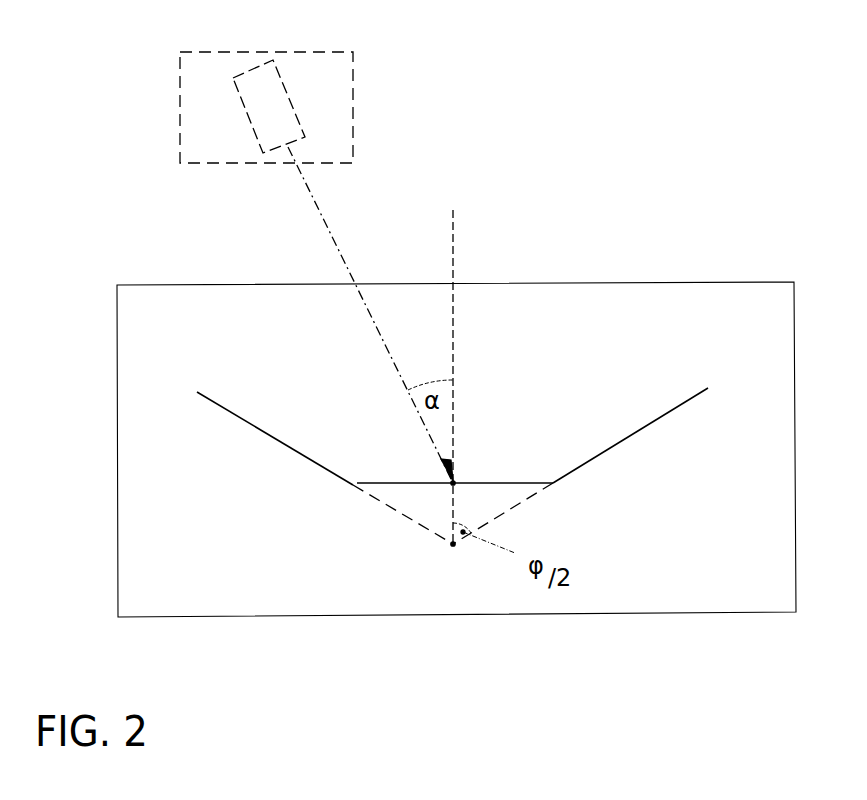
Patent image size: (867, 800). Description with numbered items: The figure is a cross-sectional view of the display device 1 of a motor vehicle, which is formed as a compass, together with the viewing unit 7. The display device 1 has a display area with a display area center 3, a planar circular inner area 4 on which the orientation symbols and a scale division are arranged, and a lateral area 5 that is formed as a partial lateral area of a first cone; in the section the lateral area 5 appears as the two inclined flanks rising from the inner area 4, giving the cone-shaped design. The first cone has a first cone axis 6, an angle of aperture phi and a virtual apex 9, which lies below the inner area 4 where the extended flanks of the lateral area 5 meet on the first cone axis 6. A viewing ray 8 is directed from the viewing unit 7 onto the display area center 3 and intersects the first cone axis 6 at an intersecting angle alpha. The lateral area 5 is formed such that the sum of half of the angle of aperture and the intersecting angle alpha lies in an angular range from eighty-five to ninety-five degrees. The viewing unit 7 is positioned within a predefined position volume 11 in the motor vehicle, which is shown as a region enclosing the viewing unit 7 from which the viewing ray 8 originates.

The display device 1 is at (256, 597).
The display area center 3 is at (453, 483).
The inner area 4 is at (520, 483).
The lateral area 5 is at (645, 426).
The first cone axis 6 is at (453, 221).
The viewing unit 7 is at (270, 99).
The viewing ray 8 is at (314, 203).
The virtual apex 9 is at (453, 544).
The predefined position volume 11 is at (332, 98).